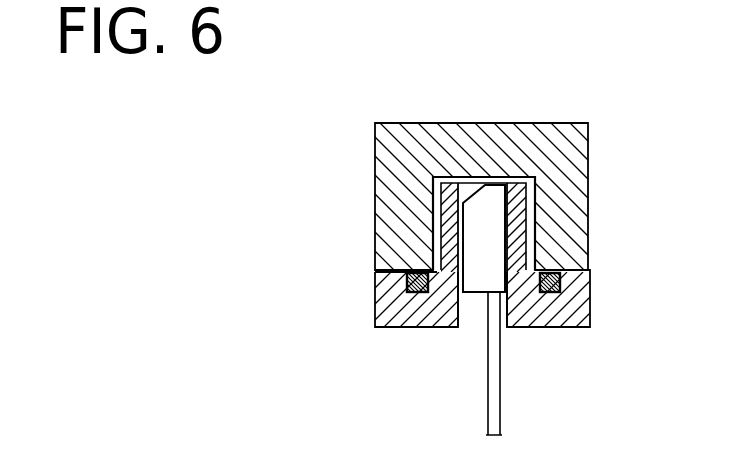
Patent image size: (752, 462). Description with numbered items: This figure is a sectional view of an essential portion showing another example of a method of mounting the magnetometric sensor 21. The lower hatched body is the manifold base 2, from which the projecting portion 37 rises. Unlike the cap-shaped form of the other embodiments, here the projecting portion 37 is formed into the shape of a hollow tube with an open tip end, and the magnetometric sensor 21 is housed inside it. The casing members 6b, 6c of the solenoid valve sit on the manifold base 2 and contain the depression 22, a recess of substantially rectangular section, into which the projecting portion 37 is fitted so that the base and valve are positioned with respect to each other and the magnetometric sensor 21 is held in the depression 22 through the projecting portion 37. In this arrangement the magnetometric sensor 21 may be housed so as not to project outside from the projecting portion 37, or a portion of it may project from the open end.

The block 6b is at (472, 196).
The block 6c is at (552, 150).
The manifold base 2 is at (567, 303).
The projecting portion 37 is at (517, 225).
The depression 22 is at (468, 188).
The magnetometric sensor 21 is at (482, 225).